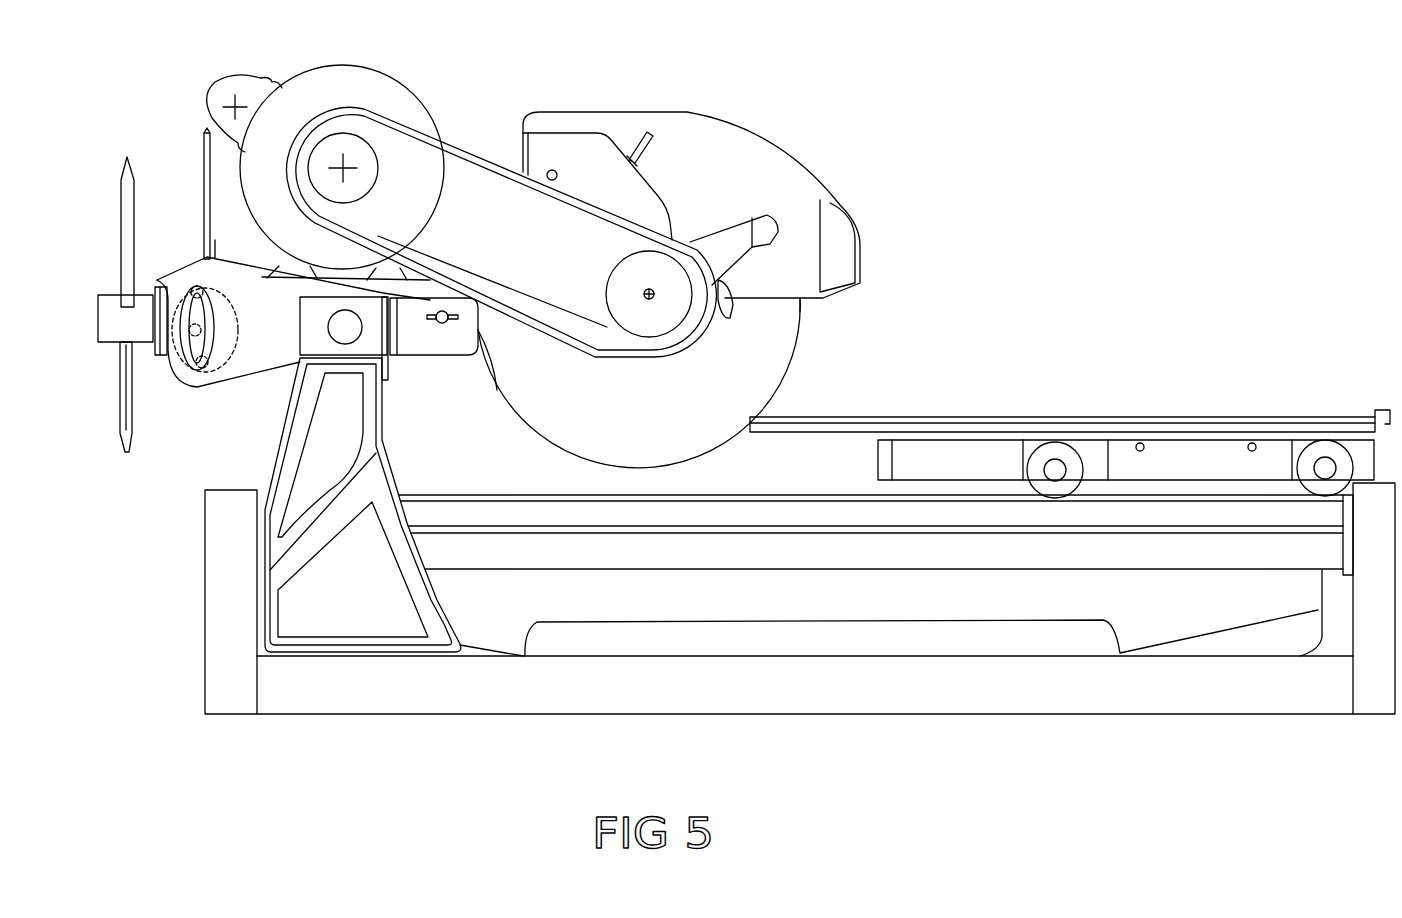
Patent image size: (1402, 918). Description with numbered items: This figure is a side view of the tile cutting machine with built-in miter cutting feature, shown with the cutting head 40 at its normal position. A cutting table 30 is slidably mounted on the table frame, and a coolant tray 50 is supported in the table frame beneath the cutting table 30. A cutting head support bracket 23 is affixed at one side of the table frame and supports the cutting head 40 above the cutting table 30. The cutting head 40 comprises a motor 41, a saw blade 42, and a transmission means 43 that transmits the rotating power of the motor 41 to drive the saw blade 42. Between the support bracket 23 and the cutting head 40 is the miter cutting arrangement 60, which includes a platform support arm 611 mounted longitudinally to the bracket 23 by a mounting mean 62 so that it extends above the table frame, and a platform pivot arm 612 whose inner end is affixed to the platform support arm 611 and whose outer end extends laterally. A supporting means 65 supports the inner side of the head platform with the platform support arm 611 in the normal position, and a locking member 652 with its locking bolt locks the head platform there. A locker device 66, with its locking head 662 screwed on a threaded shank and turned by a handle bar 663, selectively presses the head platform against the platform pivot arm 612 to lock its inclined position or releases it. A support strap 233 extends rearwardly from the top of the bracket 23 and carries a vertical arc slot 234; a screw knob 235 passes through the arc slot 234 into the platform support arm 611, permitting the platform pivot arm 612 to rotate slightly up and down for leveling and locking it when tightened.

The cutting head support bracket 23 is at (355, 605).
The cutting table 30 is at (1052, 410).
The cutting head 40 is at (680, 92).
The motor 41 is at (375, 88).
The saw blade 42 is at (765, 375).
The transmission means 43 is at (460, 135).
The coolant tray 50 is at (1188, 598).
The miter cutting arrangement 60 is at (245, 250).
The mounting mean 62 is at (218, 437).
The supporting means 65 is at (508, 352).
The locker device 66 is at (103, 212).
The support strap 233 is at (280, 370).
The arc slot 234 is at (205, 365).
The screw knob 235 is at (222, 328).
The platform support arm 611 is at (413, 368).
The platform pivot arm 612 is at (165, 294).
The locking member 652 is at (448, 332).
The locking head 662 is at (128, 322).
The handle bar 663 is at (132, 415).